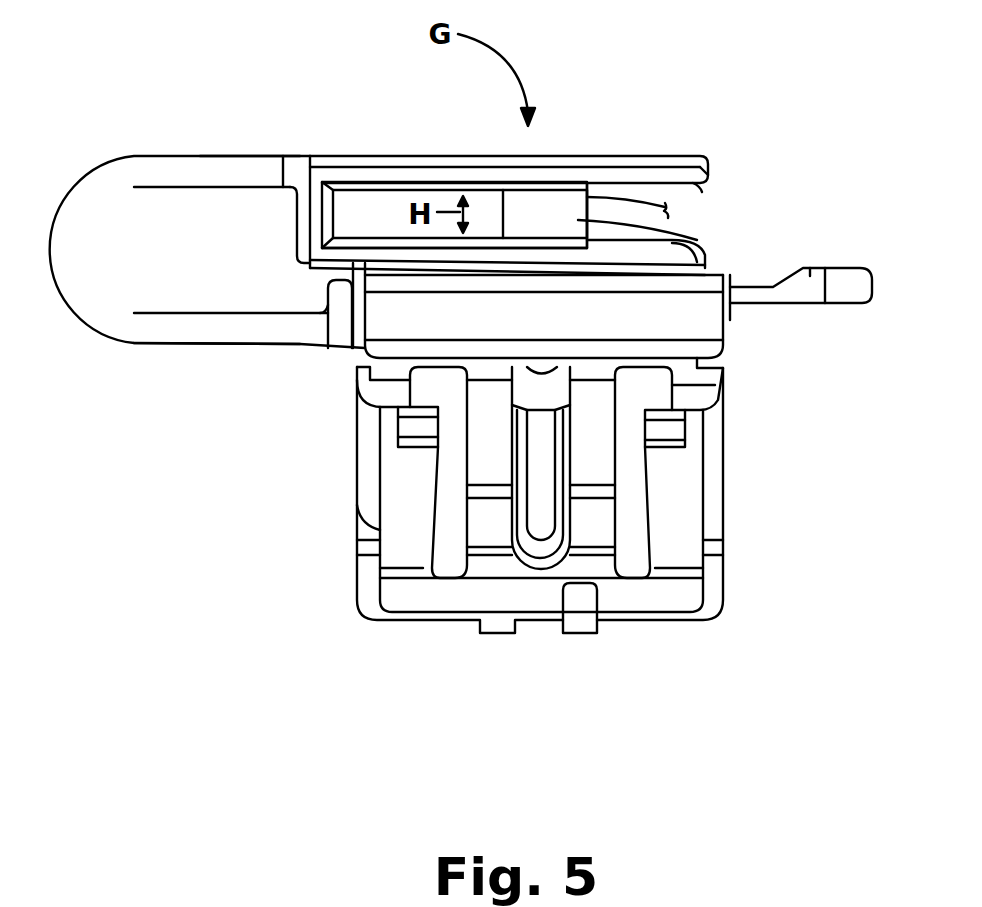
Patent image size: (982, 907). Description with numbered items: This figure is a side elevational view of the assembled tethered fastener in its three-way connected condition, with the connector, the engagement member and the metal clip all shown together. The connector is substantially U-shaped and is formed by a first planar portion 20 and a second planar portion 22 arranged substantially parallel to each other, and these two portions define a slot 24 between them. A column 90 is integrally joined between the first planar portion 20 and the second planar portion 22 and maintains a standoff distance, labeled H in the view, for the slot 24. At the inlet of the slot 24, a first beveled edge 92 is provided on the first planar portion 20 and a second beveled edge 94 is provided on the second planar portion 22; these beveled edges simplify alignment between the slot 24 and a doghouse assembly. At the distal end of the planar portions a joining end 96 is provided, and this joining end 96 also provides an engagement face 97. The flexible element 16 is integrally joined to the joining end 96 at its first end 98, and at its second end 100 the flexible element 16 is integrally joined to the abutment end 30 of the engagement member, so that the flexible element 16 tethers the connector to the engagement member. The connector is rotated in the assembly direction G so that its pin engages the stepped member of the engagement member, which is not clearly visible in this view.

The flexible element 16 is at (180, 155).
The first end 98 is at (262, 155).
The second end 100 is at (292, 347).
The joining end 96 is at (298, 222).
The engagement face 97 is at (346, 197).
The second planar portion 22 is at (668, 162).
The second beveled edge 94 is at (707, 190).
The slot 24 is at (670, 208).
The column 90 is at (673, 215).
The first beveled edge 92 is at (693, 240).
The abutment end 30 is at (347, 345).
The first planar portion 20 is at (708, 252).